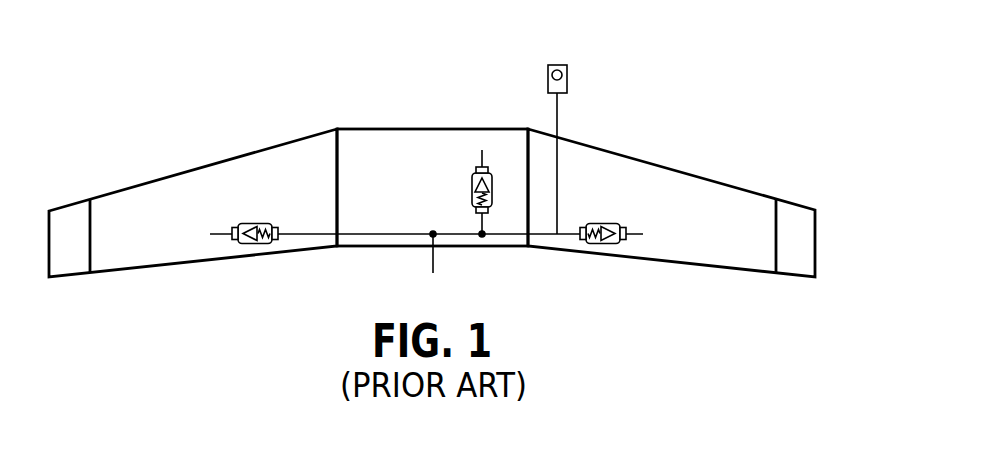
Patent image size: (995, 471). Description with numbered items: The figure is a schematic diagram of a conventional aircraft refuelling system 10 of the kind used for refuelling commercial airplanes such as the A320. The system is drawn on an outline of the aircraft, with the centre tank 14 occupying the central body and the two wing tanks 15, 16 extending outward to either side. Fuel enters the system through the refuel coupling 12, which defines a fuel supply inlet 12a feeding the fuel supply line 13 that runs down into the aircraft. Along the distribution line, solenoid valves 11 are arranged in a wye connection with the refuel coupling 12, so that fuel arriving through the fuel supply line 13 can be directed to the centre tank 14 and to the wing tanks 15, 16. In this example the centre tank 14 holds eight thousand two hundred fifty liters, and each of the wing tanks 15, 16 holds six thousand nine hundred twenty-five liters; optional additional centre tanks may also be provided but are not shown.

The aircraft refuelling system 10 is at (256, 120).
The solenoid valves 11 is at (489, 206).
The refuel coupling 12 is at (568, 76).
The fuel supply inlet 12a is at (560, 71).
The fuel supply line 13 is at (557, 105).
The centre tank 14 is at (395, 150).
The wing tank 15 is at (129, 210).
The wing tank 16 is at (712, 210).